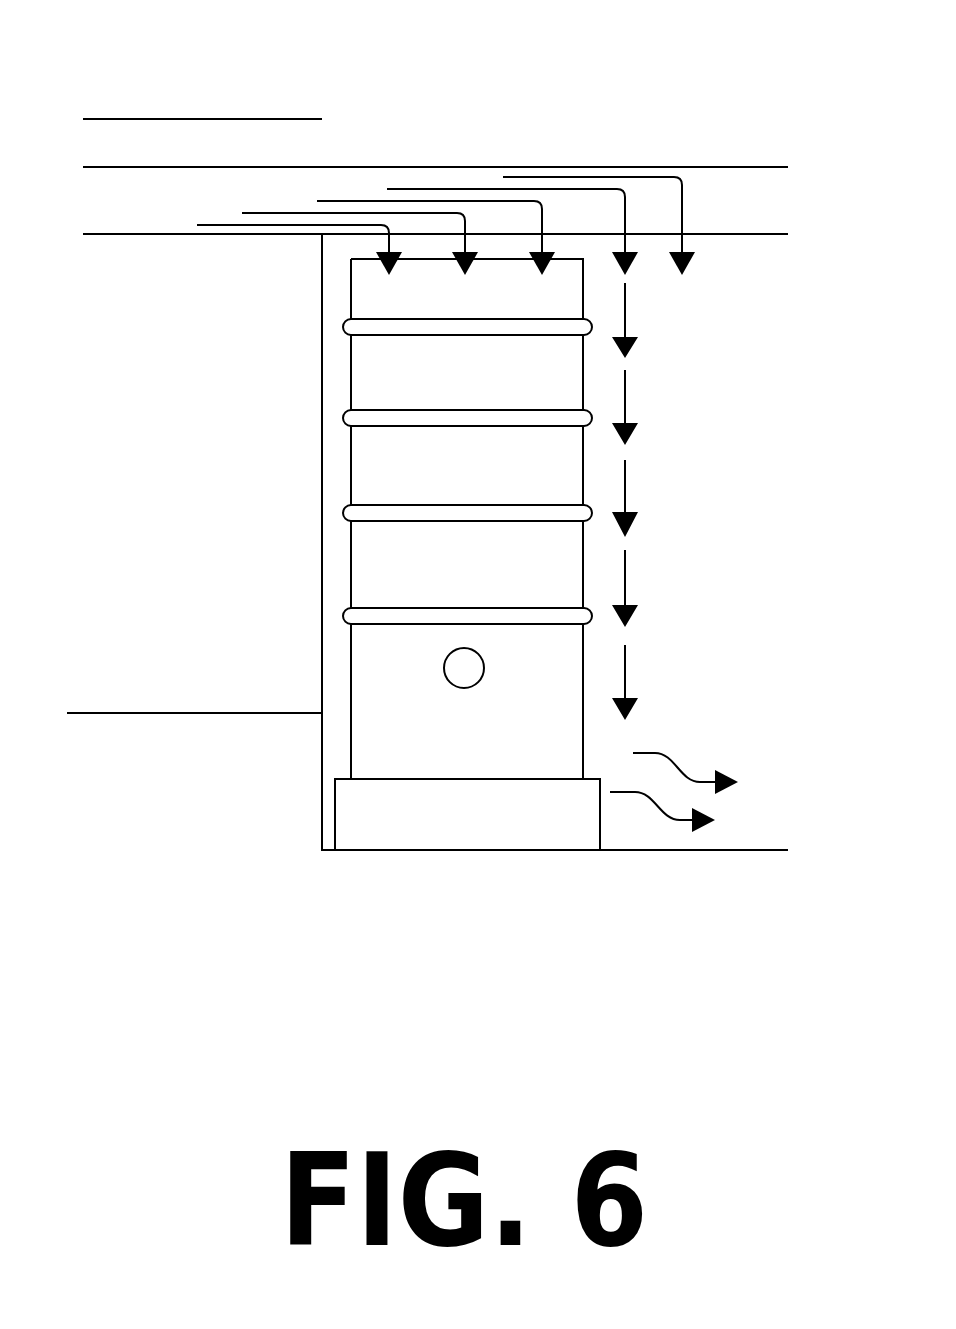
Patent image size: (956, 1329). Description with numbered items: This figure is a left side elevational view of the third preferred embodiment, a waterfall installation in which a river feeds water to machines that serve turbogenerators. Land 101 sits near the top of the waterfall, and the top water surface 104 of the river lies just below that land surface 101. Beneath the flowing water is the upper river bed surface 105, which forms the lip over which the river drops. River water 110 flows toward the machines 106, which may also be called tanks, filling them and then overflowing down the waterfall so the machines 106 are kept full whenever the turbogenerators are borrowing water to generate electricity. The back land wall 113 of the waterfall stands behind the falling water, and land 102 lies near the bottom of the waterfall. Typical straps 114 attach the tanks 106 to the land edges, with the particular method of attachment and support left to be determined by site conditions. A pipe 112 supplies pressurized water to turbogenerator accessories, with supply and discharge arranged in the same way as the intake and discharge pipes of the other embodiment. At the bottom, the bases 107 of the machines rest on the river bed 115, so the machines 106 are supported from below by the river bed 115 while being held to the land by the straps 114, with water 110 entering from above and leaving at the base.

The land 101 is at (148, 119).
The land 102 is at (168, 713).
The top water surface 104 is at (682, 167).
The upper river bed surface 105 is at (755, 234).
The machines 106 is at (348, 457).
The bases 107 is at (462, 850).
The river water 110 is at (443, 178).
The pipe 112 is at (448, 682).
The back land wall 113 is at (322, 593).
The straps 114 is at (500, 507).
The river bed 115 is at (777, 847).